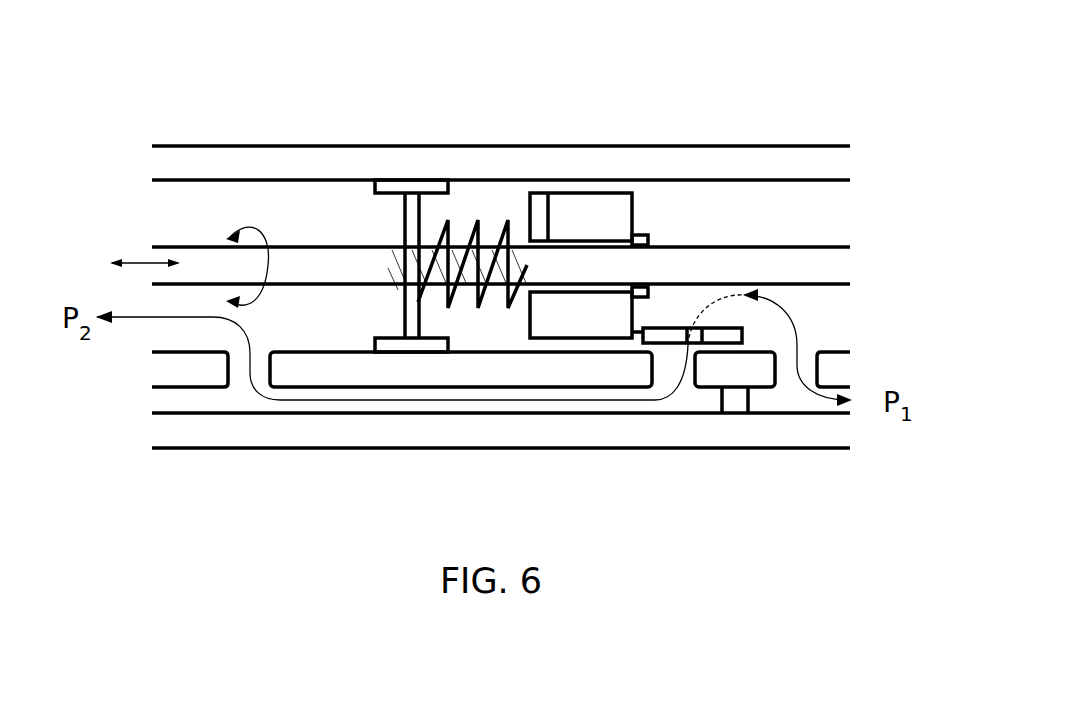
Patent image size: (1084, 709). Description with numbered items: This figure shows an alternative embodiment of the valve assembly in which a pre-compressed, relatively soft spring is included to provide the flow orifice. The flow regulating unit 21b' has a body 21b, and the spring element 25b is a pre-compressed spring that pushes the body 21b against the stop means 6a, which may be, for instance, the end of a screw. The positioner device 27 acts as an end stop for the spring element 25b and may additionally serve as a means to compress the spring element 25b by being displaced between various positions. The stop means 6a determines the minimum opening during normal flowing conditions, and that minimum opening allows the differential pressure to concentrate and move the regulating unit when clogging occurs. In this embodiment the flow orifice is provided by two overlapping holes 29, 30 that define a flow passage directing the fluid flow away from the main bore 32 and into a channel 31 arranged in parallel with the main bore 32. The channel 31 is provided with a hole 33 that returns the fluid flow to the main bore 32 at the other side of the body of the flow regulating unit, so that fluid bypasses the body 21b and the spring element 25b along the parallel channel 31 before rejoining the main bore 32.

The flow regulating unit 21b' is at (501, 168).
The main bore 32 is at (270, 207).
The positioner device 27 is at (393, 187).
The spring element 25b is at (504, 238).
The body 21b is at (592, 211).
The stop means 6a is at (640, 237).
The overlapping hole 30 is at (708, 338).
The channel 31 is at (452, 407).
The hole 33 is at (258, 377).
The overlapping hole 29 is at (648, 372).